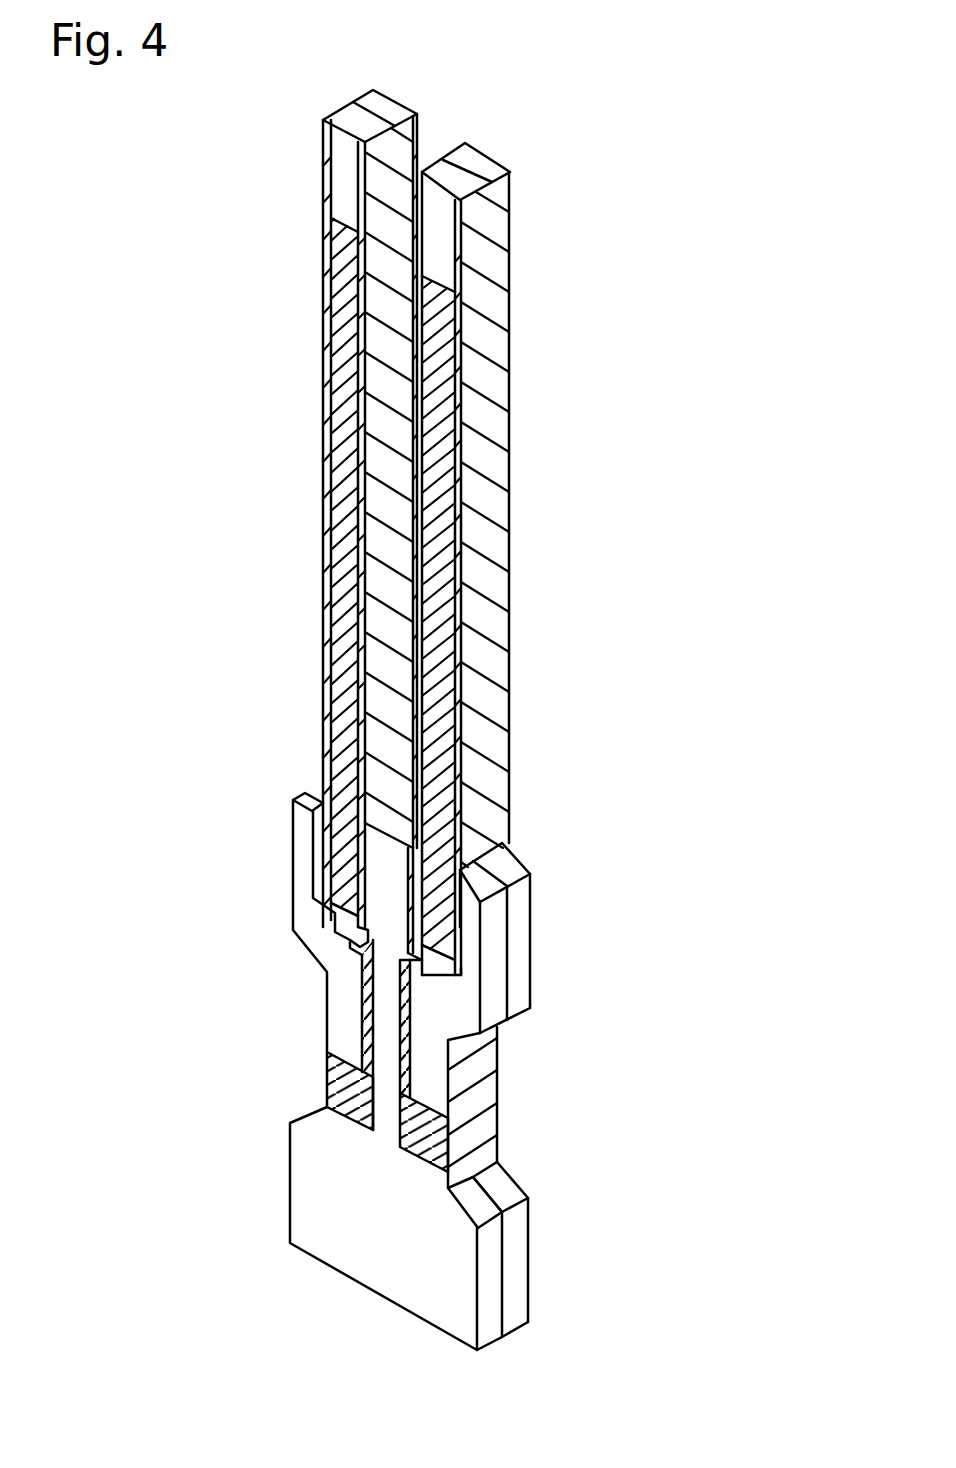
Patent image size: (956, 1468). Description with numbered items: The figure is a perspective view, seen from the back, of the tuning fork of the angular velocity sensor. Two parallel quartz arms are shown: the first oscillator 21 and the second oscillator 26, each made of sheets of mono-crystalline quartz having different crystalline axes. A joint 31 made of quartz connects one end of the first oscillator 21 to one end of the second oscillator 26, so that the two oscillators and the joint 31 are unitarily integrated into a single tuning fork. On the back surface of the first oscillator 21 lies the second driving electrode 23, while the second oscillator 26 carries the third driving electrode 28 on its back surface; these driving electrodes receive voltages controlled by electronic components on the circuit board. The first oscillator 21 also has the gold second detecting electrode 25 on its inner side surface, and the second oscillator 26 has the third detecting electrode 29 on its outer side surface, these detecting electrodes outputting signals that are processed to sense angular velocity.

The first oscillator 21 is at (340, 178).
The second driving electrode 23 is at (340, 398).
The second detecting electrode 25 is at (375, 493).
The second oscillator 26 is at (448, 267).
The third driving electrode 28 is at (450, 420).
The third detecting electrode 29 is at (492, 520).
The joint 31 is at (383, 932).